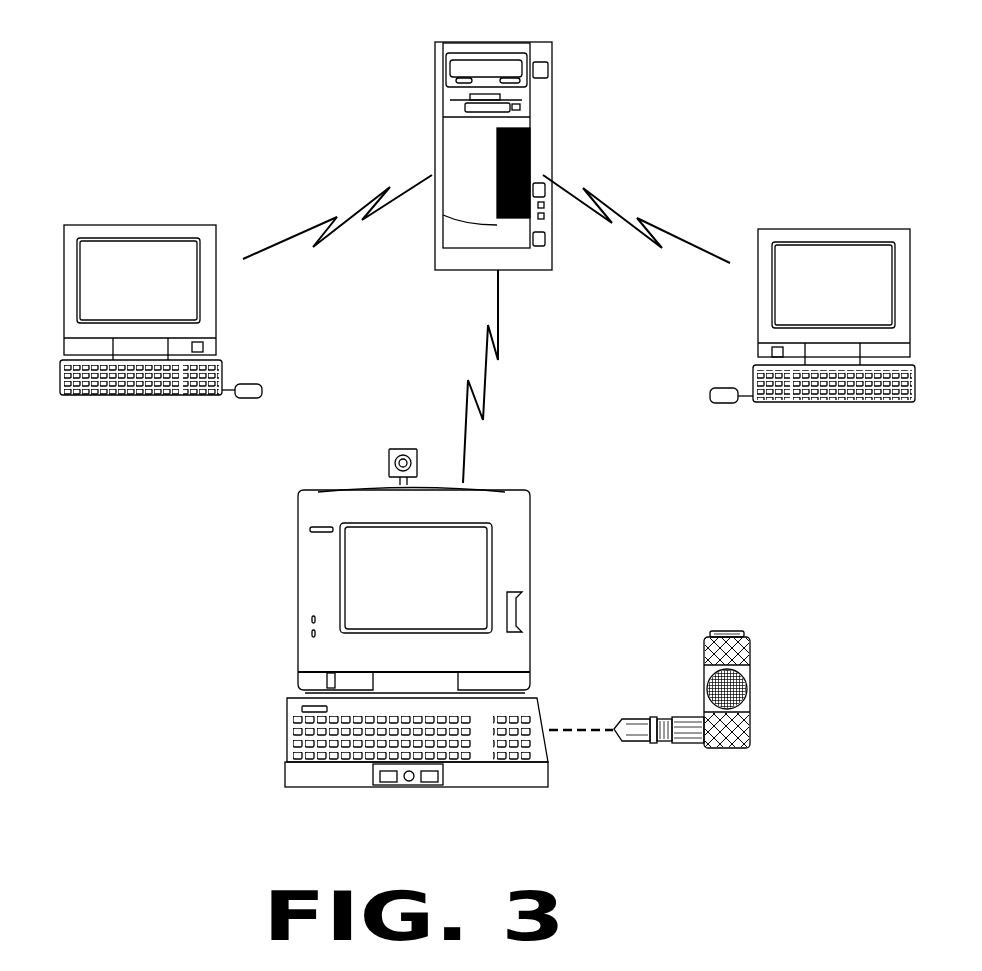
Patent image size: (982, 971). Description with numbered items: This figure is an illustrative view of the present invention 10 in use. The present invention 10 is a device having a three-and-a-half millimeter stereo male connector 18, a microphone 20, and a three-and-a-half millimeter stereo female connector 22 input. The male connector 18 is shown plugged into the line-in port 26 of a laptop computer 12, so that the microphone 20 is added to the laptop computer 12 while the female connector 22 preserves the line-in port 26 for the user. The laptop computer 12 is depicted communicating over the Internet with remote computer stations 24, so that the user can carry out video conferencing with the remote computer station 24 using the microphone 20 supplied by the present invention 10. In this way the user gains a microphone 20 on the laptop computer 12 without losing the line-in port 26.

The present invention 10 is at (780, 626).
The laptop computer 12 is at (513, 462).
The 3.5 mm stereo male connector 18 is at (640, 694).
The microphone 20 is at (750, 690).
The 3.5 mm stereo female connector 22 is at (729, 604).
The remote computer station 24 is at (150, 188).
The line-in port 26 is at (562, 748).